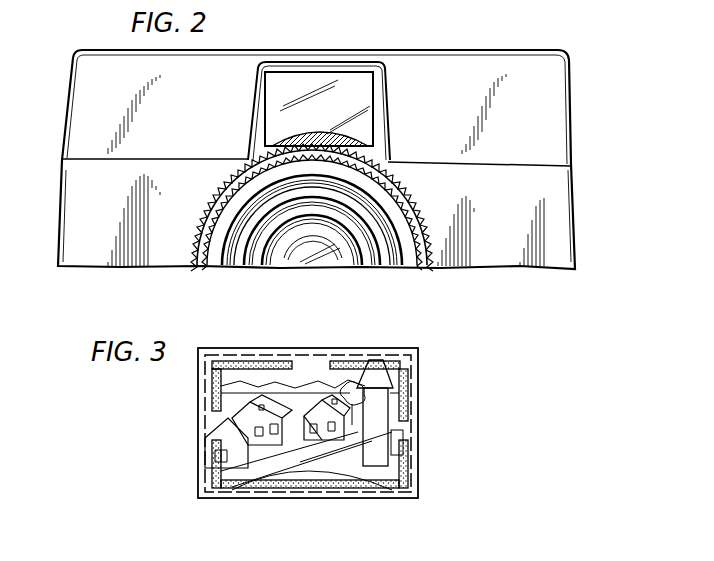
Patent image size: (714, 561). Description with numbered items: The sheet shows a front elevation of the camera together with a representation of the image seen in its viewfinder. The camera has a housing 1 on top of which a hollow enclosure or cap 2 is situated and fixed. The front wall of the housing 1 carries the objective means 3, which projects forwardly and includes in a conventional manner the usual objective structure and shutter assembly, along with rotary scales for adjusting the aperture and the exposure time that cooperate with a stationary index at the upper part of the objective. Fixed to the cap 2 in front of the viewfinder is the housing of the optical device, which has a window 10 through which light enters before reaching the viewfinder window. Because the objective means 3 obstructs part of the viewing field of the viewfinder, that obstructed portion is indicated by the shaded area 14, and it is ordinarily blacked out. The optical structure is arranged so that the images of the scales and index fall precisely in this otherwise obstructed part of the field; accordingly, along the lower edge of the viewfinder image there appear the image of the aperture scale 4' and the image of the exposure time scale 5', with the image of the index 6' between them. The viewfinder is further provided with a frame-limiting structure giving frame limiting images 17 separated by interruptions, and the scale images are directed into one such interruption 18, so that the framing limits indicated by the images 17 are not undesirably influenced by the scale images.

In FIG. 2, the housing 1 is at (552, 226).
In FIG. 2, the cap 2 is at (557, 129).
In FIG. 2, the objective means 3 is at (250, 273).
In FIG. 2, the window 10 is at (285, 86).
In FIG. 2, the shaded area 14 is at (320, 133).
In FIG. 3, the frame limiting images 17 is at (393, 364).
In FIG. 3, the interruption 18 is at (212, 416).
In FIG. 3, the image of the aperture scale 4' is at (287, 502).
In FIG. 3, the image of the exposure time scale 5' is at (307, 509).
In FIG. 3, the image of the index 6' is at (303, 518).